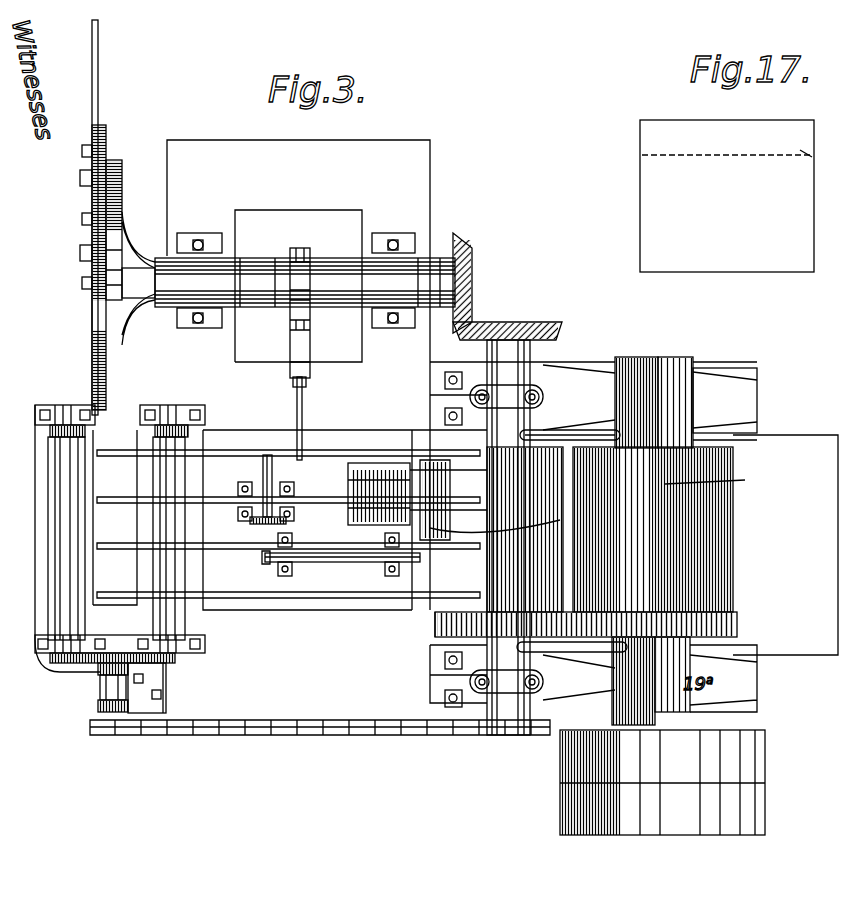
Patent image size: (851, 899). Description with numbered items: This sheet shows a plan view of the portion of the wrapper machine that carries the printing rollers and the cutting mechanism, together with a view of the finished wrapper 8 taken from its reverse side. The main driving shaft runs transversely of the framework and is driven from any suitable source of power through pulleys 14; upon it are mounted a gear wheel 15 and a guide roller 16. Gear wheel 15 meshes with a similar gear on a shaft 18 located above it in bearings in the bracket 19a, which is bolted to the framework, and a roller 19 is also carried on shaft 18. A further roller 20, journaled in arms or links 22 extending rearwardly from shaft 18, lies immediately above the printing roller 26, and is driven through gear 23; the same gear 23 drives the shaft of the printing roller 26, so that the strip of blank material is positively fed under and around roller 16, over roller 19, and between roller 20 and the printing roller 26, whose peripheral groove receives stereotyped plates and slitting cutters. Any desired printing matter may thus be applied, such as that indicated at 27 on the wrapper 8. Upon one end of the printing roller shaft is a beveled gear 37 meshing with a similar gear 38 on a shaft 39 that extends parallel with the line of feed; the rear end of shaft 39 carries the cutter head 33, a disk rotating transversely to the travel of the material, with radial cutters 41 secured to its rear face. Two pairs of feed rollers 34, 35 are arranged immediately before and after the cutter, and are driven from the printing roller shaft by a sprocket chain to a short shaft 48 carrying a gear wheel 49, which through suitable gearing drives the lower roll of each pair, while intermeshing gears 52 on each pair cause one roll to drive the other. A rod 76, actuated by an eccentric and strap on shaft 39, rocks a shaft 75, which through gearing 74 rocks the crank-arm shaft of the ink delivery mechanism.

In FIG. 3, the cutter 41 is at (99, 72).
In FIG. 3, the cutter head 33 is at (113, 168).
In FIG. 3, the shaft 39 is at (335, 268).
In FIG. 3, the rod 76 is at (304, 405).
In FIG. 3, the beveled gear 38 is at (478, 270).
In FIG. 3, the beveled gear 37 is at (516, 330).
In FIG. 3, the arms or links 22 is at (568, 430).
In FIG. 3, the shaft 18 is at (636, 360).
In FIG. 3, the bracket 19a is at (725, 401).
In FIG. 3, the roller 19 is at (718, 477).
In FIG. 3, the guide roller 16 is at (733, 525).
In FIG. 3, the roller 20 is at (509, 529).
In FIG. 3, the printing roller 26 is at (454, 504).
In FIG. 3, the gear wheel 15 is at (738, 625).
In FIG. 3, the gear 23 is at (436, 628).
In FIG. 3, the pulleys 14 is at (770, 755).
In FIG. 3, the intermeshing gears 52 is at (50, 428).
In FIG. 3, the feed rollers 35 is at (55, 482).
In FIG. 3, the feed rollers 34 is at (185, 478).
In FIG. 3, the gear wheel 49 is at (110, 653).
In FIG. 3, the short shaft 48 is at (100, 688).
In FIG. 3, the gearing 74 is at (262, 558).
In FIG. 3, the shaft 75 is at (328, 563).
In FIG. 17, the bag 8 is at (745, 196).
In FIG. 17, the printing matter 27 is at (790, 170).